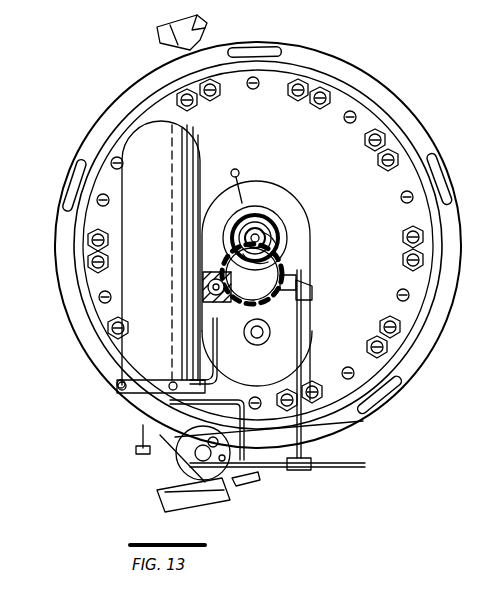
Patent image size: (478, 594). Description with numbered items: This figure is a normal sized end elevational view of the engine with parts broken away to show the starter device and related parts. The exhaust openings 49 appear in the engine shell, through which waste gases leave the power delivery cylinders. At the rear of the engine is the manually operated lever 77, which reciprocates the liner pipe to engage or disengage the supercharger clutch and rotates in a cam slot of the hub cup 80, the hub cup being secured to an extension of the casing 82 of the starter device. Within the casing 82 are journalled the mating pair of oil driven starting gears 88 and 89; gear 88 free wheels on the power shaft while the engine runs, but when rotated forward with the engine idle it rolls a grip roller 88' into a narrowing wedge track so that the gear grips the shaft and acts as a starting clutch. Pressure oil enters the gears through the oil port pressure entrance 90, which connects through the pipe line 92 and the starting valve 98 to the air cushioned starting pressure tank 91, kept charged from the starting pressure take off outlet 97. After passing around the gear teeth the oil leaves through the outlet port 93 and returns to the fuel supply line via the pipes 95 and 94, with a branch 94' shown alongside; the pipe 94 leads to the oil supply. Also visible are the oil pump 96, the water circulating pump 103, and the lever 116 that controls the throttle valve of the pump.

The exhaust openings 49 is at (262, 50).
The lever 77 is at (242, 170).
The hub cup 80 is at (287, 214).
The casing 82 is at (309, 195).
The starting gear 88 is at (285, 273).
The grip roller 88' is at (307, 229).
The starting gear 89 is at (305, 296).
The oil port pressure entrance 90 is at (206, 287).
The starting pressure tank 91 is at (158, 238).
The pipe line 92 is at (212, 335).
The outlet port 93 is at (290, 283).
The pipe 94 is at (290, 385).
The cross bar 94' is at (286, 479).
The pipe 95 is at (345, 430).
The oil pump 96 is at (190, 460).
The starting pressure take off outlet 97 is at (150, 421).
The starting valve 98 is at (118, 384).
The water circulating pump 103 is at (208, 512).
The lever 116 is at (143, 441).